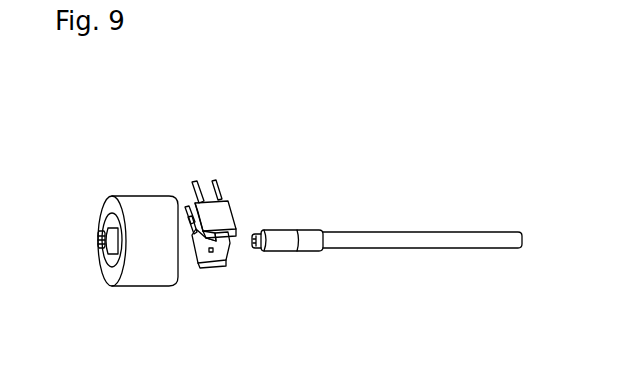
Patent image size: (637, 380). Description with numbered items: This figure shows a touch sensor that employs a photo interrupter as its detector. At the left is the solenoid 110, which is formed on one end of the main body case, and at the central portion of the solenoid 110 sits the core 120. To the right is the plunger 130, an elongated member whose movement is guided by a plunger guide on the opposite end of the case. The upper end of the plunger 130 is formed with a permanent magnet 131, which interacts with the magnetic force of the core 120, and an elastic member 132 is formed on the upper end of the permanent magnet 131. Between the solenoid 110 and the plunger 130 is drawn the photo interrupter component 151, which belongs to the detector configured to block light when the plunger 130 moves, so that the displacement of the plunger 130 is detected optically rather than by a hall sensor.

The solenoid 110 is at (142, 208).
The core 120 is at (98, 239).
The plunger 130 is at (425, 243).
The permanent magnet 131 is at (286, 242).
The elastic member 132 is at (258, 250).
The sensor holder 151 is at (225, 218).